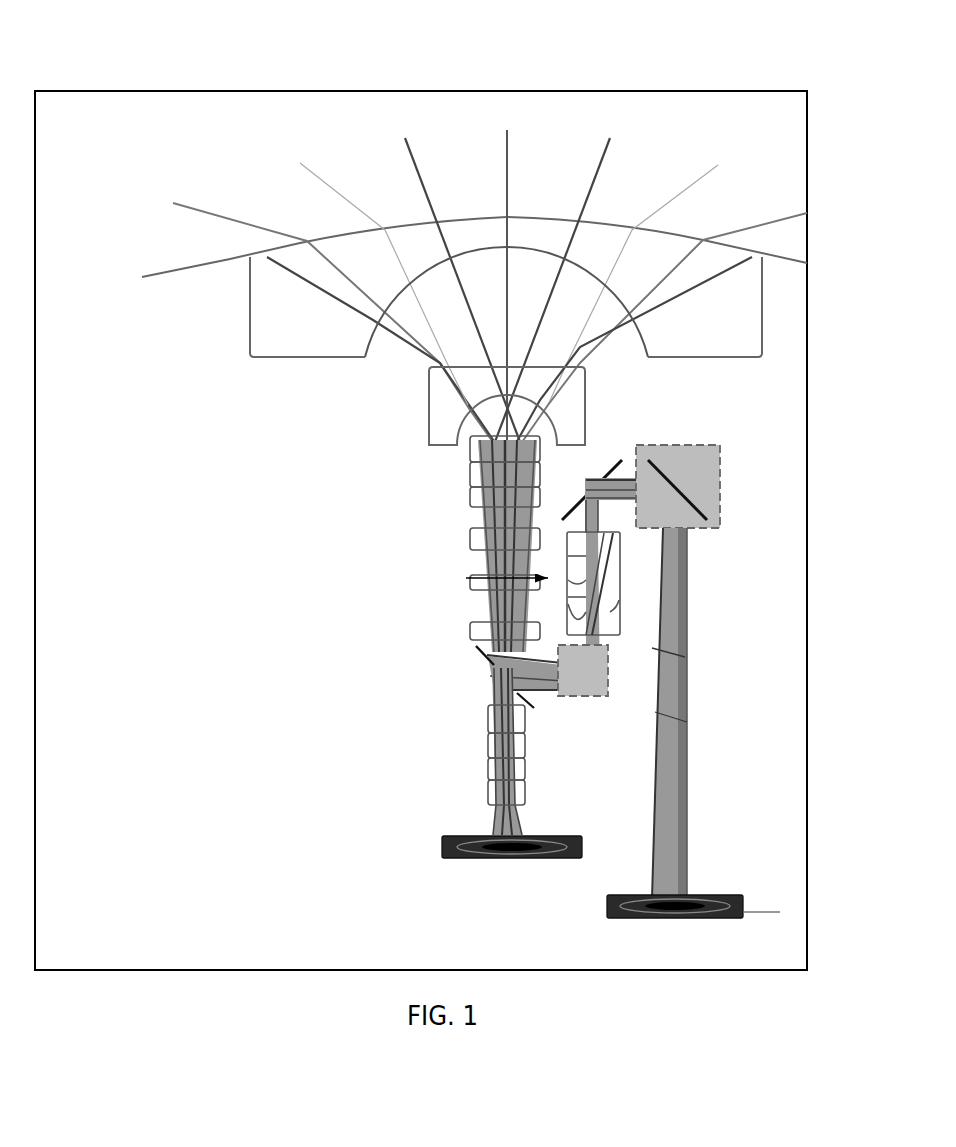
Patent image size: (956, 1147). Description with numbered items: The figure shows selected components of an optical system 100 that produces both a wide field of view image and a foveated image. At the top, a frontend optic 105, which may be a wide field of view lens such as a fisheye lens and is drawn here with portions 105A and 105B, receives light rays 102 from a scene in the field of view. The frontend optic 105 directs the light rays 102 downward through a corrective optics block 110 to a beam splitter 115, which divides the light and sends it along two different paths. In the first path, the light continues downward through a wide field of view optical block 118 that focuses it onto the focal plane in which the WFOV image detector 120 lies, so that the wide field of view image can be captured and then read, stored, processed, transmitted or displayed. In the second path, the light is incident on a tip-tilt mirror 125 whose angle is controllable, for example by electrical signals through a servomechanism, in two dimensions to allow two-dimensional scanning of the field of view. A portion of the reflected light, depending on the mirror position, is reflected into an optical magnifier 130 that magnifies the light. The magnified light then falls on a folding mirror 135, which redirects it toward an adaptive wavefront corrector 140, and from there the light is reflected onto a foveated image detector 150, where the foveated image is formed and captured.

The optical system 100 is at (512, 40).
The light rays 102 is at (459, 286).
The frontend optic 105 is at (550, 346).
The first collector portion 105A is at (307, 307).
The second collector portion 105B is at (818, 295).
The corrective optics block 110 is at (465, 628).
The beam splitter 115 is at (482, 657).
The wide field of view optical block 118 is at (486, 760).
The WFOV image detector 120 is at (440, 845).
The tip-tilt mirror 125 is at (611, 678).
The optical magnifier 130 is at (622, 585).
The folding mirror 135 is at (600, 468).
The adaptive wavefront corrector 140 is at (724, 473).
The foveated image detector 150 is at (604, 912).